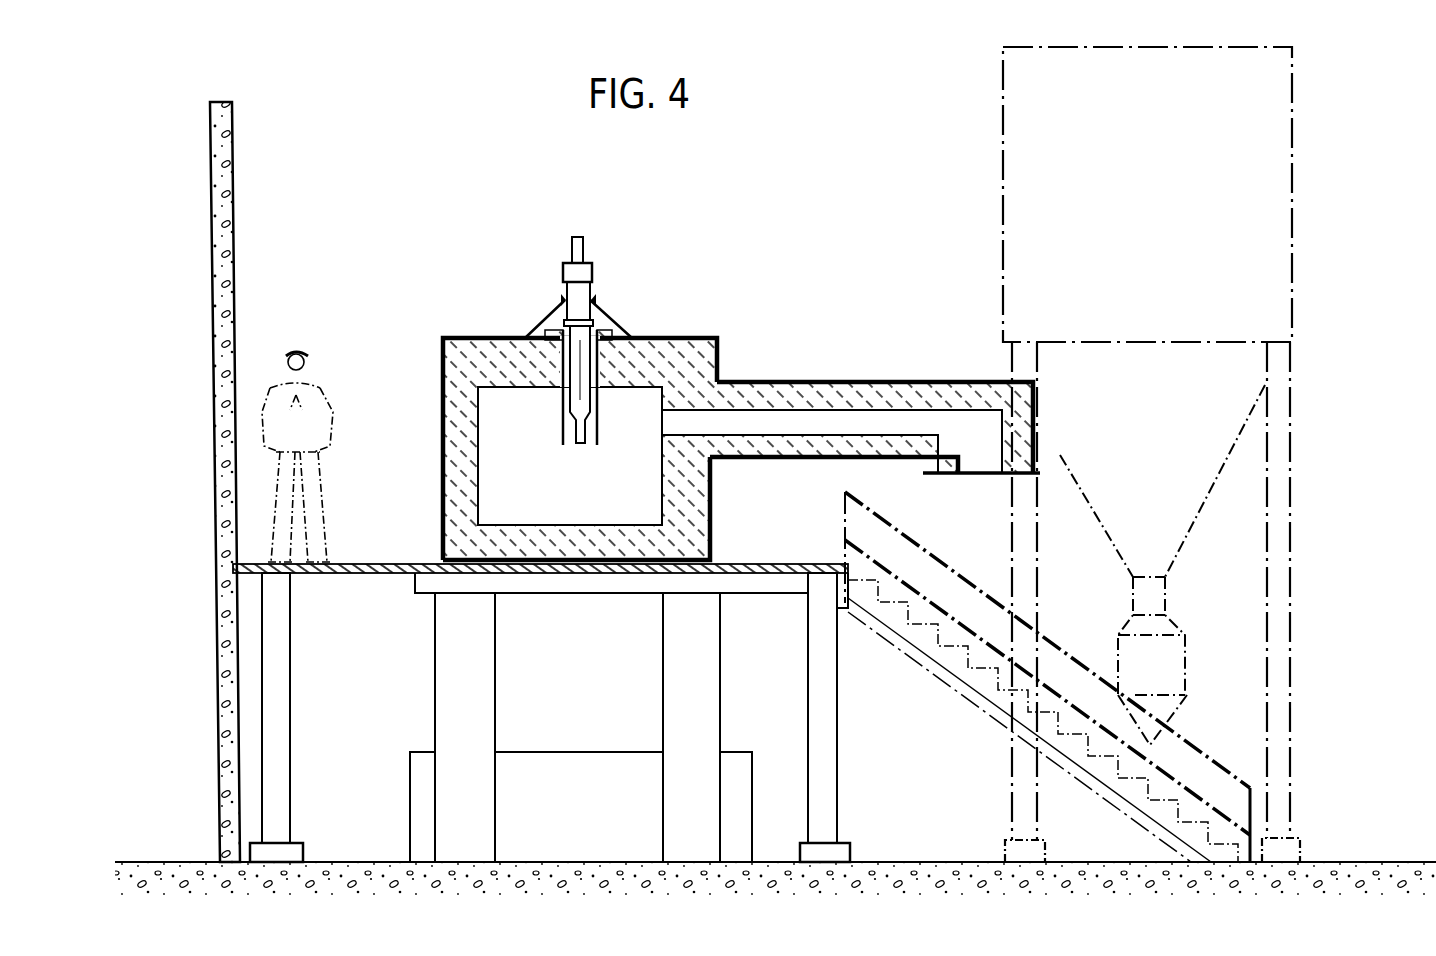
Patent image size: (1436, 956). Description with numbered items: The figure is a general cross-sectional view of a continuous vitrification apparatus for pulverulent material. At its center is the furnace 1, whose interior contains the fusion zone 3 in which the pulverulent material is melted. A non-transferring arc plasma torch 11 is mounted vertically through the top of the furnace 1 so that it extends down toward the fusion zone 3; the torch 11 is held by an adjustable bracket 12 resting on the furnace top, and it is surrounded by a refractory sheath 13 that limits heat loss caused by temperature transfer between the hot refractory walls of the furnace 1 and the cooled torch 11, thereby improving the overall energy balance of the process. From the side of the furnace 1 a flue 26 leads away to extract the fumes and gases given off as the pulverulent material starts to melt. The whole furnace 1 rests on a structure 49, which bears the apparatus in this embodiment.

The furnace 1 is at (412, 330).
The fusion zone 3 is at (520, 492).
The non-transferring arc plasma torch 11 is at (606, 268).
The adjustable bracket 12 is at (542, 322).
The refractory sheath 13 is at (598, 430).
The flue 26 is at (870, 418).
The structure 49 is at (428, 680).